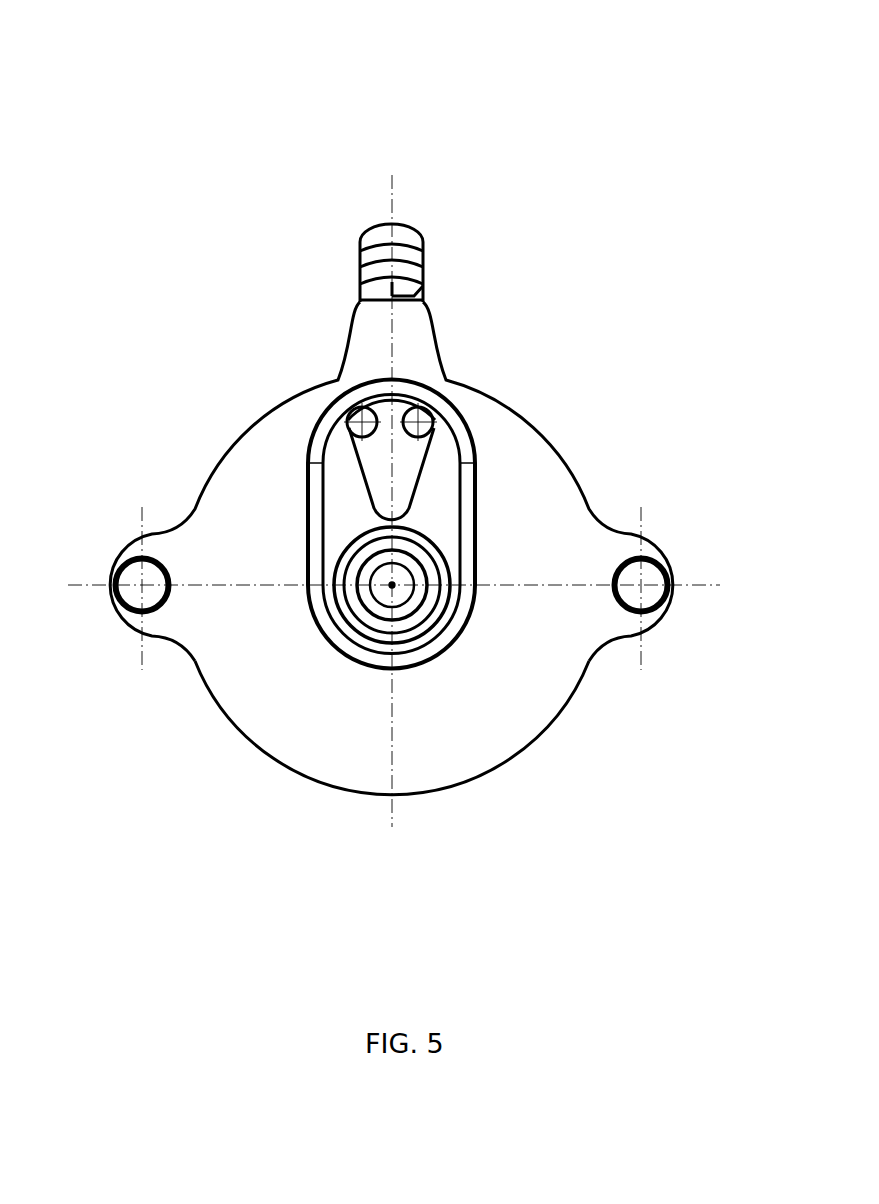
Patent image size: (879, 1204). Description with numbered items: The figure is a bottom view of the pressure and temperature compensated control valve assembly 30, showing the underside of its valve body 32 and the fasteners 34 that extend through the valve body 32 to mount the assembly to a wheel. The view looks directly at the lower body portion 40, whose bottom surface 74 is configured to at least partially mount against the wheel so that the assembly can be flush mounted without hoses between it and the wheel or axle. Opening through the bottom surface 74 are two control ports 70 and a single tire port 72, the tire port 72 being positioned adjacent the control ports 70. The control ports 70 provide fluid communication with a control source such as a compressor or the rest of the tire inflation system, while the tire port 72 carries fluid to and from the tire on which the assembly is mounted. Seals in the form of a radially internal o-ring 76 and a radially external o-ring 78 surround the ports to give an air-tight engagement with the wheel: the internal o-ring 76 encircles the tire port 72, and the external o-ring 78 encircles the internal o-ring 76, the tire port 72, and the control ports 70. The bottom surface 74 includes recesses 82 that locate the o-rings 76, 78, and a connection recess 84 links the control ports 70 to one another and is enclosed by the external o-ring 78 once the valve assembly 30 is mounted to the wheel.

The valve assembly 30 is at (688, 172).
The valve body 32 is at (212, 713).
The fasteners 34 is at (650, 572).
The lower body portion 40 is at (325, 782).
The control ports 70 is at (368, 411).
The tire port 72 is at (406, 603).
The bottom surface 74 is at (465, 765).
The radially internal o-ring 76 is at (362, 538).
The radially external o-ring 78 is at (312, 528).
The recesses 82 is at (438, 512).
The connection recess 84 is at (408, 455).